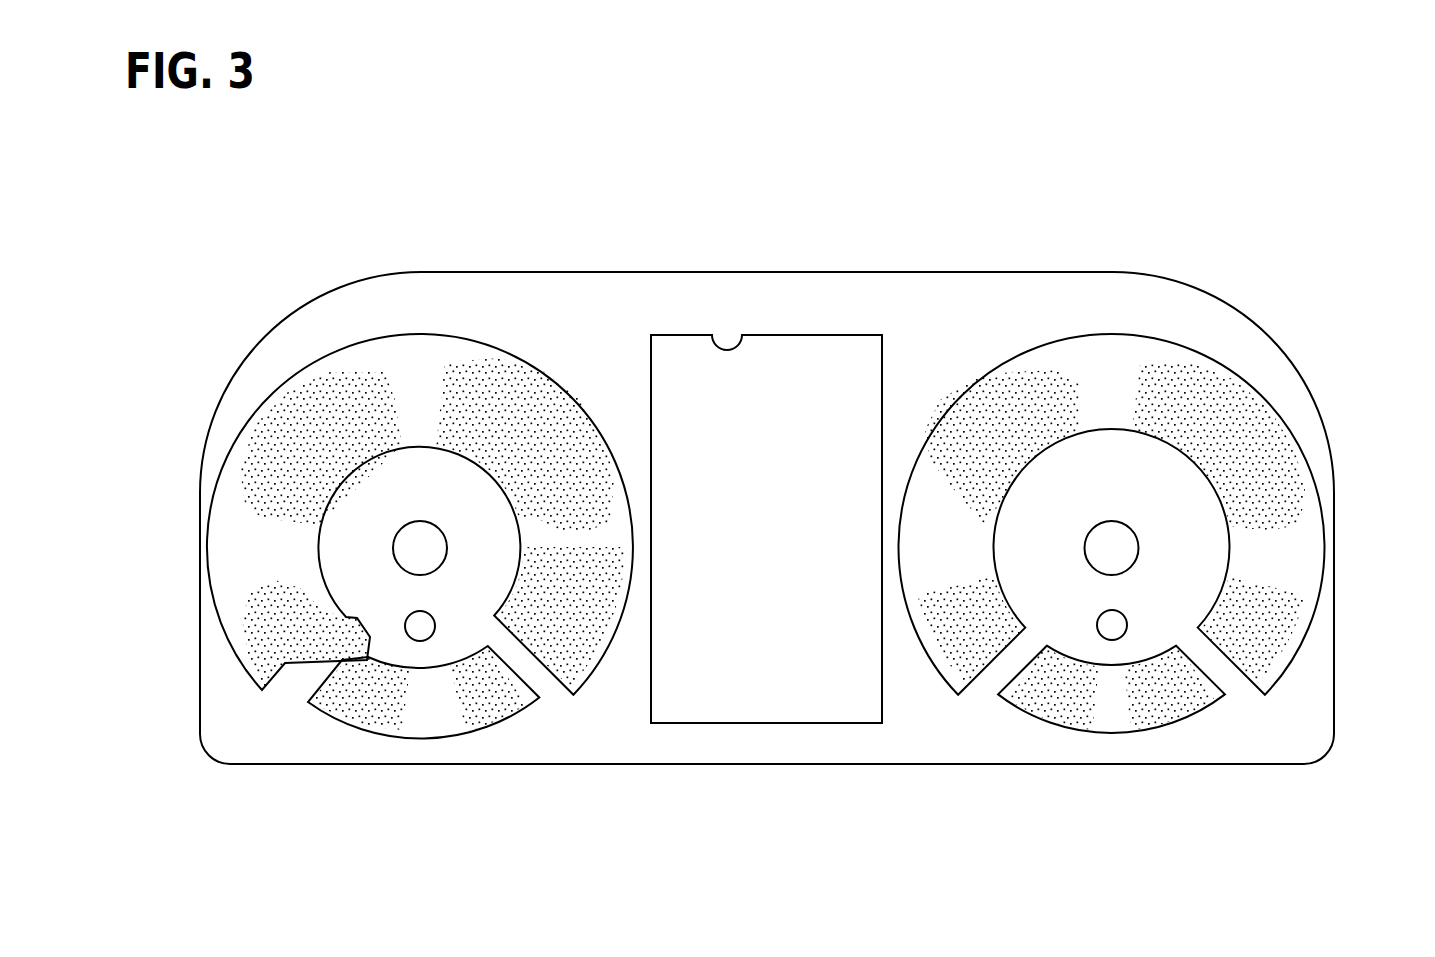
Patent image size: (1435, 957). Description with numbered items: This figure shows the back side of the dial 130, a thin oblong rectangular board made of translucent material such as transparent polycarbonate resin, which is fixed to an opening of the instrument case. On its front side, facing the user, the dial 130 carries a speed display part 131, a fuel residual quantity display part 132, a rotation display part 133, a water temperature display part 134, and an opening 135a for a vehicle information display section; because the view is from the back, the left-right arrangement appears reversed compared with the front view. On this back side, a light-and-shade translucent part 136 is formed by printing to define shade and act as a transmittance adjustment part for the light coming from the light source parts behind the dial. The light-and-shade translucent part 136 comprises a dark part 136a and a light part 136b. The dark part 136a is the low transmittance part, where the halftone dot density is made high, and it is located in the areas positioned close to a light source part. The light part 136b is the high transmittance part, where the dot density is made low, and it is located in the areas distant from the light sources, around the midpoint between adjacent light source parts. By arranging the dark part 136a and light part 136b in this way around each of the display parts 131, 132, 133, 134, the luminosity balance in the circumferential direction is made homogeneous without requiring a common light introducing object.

The dial 130 is at (410, 288).
The speed display part 131 is at (476, 328).
The fuel residual quantity display part 132 is at (366, 748).
The rotation display part 133 is at (1094, 322).
The water temperature display part 134 is at (1056, 748).
The opening 135a is at (743, 332).
The light-and-shade translucent part 136 is at (225, 536).
The dark part 136a is at (303, 440).
The light part 136b is at (267, 556).